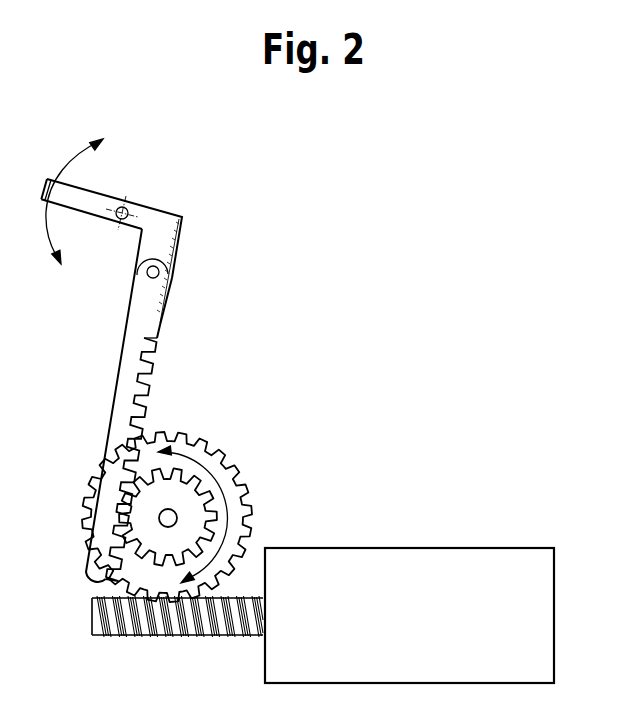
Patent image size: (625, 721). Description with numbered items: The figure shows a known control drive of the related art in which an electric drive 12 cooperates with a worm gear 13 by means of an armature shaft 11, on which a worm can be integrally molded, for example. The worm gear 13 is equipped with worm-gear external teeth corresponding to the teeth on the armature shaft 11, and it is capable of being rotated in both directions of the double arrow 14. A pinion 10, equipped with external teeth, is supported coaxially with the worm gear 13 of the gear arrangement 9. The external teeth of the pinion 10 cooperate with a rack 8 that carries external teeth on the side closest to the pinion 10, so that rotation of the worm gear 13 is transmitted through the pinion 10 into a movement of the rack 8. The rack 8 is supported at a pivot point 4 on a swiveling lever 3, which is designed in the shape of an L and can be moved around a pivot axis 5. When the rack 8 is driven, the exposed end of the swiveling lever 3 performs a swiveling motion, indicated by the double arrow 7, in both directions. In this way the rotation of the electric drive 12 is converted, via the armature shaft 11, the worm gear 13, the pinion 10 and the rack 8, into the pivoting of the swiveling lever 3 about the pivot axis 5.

The swiveling lever 3 is at (160, 222).
The pivot point 4 is at (150, 275).
The pivot axis 5 is at (126, 211).
The double arrow 7 is at (58, 172).
The rack 8 is at (143, 379).
The gear arrangement 9 is at (245, 418).
The pinion 10 is at (188, 508).
The armature shaft 11 is at (168, 637).
The electric drive 12 is at (422, 568).
The worm gear 13 is at (233, 478).
The double arrow 14 is at (235, 525).